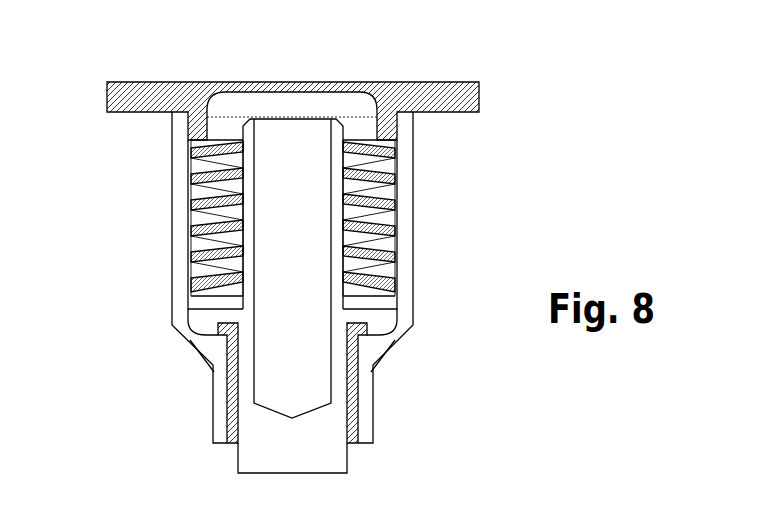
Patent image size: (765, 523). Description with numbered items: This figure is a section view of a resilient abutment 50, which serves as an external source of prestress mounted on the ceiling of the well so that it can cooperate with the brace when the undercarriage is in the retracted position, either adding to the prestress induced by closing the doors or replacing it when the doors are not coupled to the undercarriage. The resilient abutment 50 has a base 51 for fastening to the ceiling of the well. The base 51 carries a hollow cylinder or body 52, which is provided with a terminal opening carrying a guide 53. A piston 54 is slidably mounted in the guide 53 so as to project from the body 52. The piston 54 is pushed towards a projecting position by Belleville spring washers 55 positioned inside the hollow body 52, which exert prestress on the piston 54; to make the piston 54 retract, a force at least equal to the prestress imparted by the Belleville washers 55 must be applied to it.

The resilient abutment 50 is at (122, 249).
The base 51 is at (450, 95).
The hollow cylinder or body 52 is at (188, 198).
The guide 53 is at (350, 398).
The piston 54 is at (245, 459).
The Belleville spring washers 55 is at (388, 218).